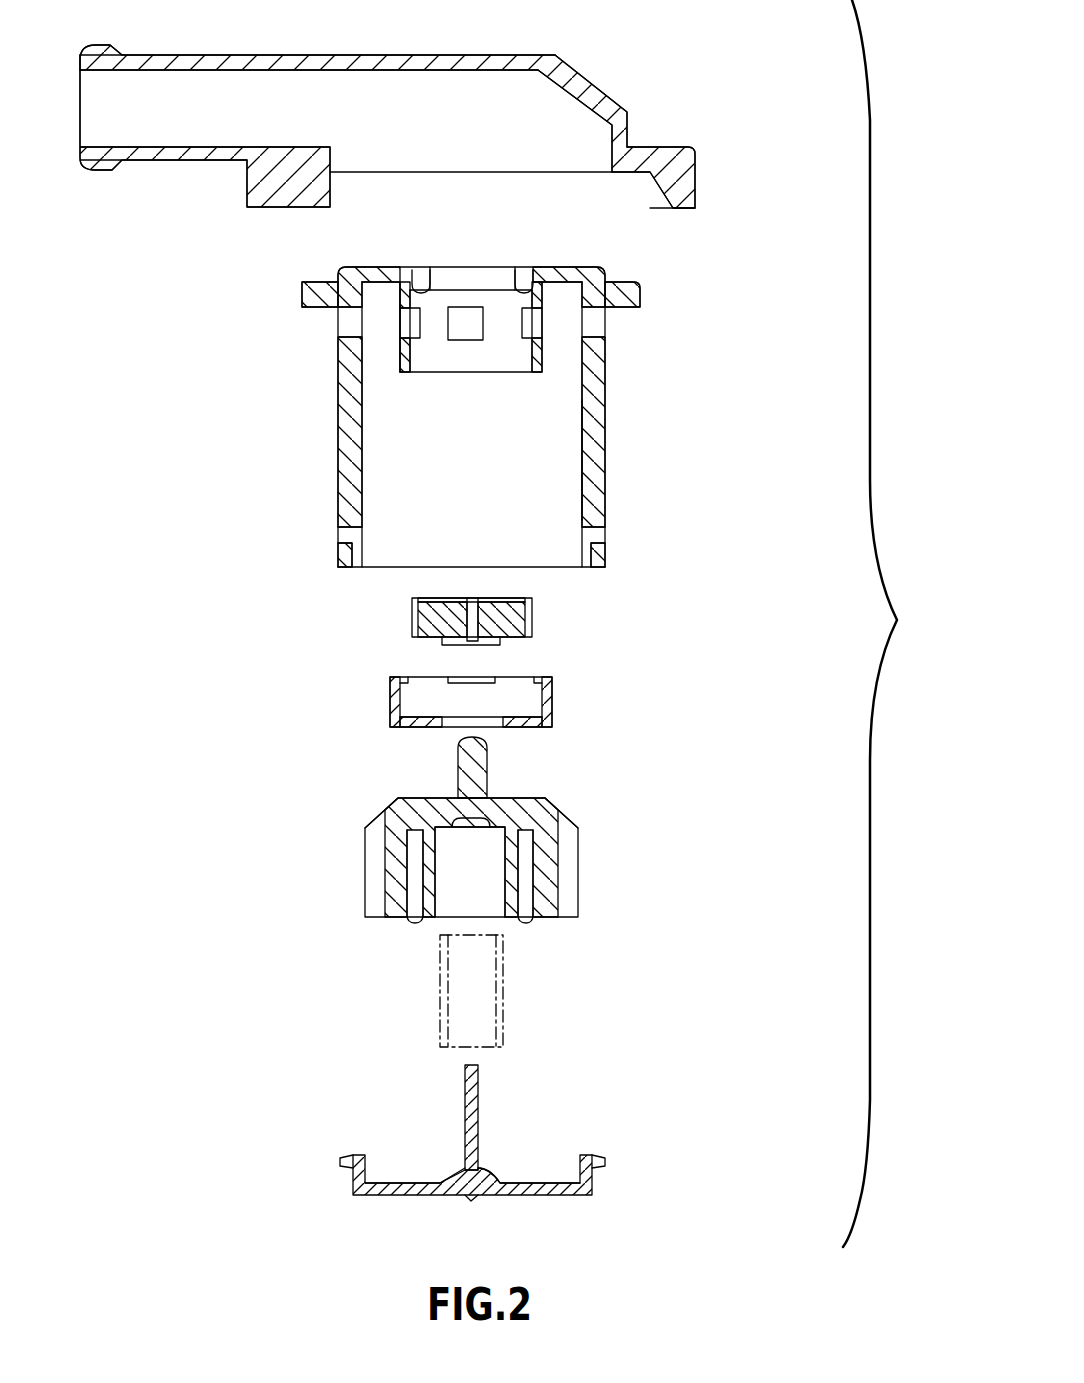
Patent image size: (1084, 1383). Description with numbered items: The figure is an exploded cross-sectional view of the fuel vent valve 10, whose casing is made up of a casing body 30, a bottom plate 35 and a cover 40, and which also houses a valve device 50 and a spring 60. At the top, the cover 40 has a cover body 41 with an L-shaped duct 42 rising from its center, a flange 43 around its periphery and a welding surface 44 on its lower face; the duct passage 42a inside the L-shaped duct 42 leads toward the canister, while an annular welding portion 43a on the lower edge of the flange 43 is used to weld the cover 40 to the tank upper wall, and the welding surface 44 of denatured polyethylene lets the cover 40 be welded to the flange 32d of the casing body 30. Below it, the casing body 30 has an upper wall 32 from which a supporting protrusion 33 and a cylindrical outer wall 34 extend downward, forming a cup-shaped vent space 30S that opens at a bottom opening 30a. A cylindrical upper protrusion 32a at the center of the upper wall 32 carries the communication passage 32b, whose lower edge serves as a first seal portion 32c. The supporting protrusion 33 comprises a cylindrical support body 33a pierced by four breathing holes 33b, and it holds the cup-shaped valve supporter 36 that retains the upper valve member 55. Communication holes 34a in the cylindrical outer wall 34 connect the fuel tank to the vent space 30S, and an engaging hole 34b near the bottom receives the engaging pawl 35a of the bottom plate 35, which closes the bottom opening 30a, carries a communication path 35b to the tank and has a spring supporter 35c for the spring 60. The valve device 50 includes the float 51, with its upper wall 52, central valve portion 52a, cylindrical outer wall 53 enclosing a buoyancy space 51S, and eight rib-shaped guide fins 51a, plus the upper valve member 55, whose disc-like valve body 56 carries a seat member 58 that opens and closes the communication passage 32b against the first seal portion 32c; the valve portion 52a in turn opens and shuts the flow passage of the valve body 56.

The fuel vent valve 10 is at (703, 84).
The cover 40 is at (515, 56).
The L-shaped duct 42 is at (440, 53).
The duct passage 42a is at (207, 70).
The cover body 41 is at (652, 138).
The flange 43 is at (697, 153).
The annular welding portion 43a is at (688, 208).
The welding surface 44 is at (292, 178).
The casing body 30 is at (703, 315).
The upper wall 32 is at (578, 268).
The upper protrusion 32a is at (525, 277).
The communication passage 32b is at (478, 281).
The first seal portion 32c is at (427, 287).
The flange 32d is at (303, 296).
The supporting protrusion 33 is at (490, 362).
The cylindrical support body 33a is at (407, 360).
The breathing hole 33b is at (404, 323).
The cylindrical outer wall 34 is at (605, 417).
The communication hole 34a is at (598, 328).
The engaging hole 34b is at (598, 538).
The bottom opening 30a is at (552, 553).
The vent space 30S is at (583, 462).
The upper valve member 55 is at (633, 590).
The seat member 58 is at (505, 597).
The valve body 56 is at (523, 619).
The valve supporter 36 is at (548, 701).
The valve device 50 is at (703, 847).
The upper wall 52 is at (398, 805).
The valve portion 52a is at (490, 772).
The float 51 is at (553, 864).
The guide fin 51a is at (574, 820).
The buoyancy space 51S is at (493, 912).
The cylindrical outer wall 53 is at (395, 877).
The spring 60 is at (503, 1027).
The bottom plate 35 is at (547, 1180).
The engaging pawl 35a is at (352, 1156).
The communication path 35b is at (417, 1183).
The spring supporter 35c is at (497, 1180).